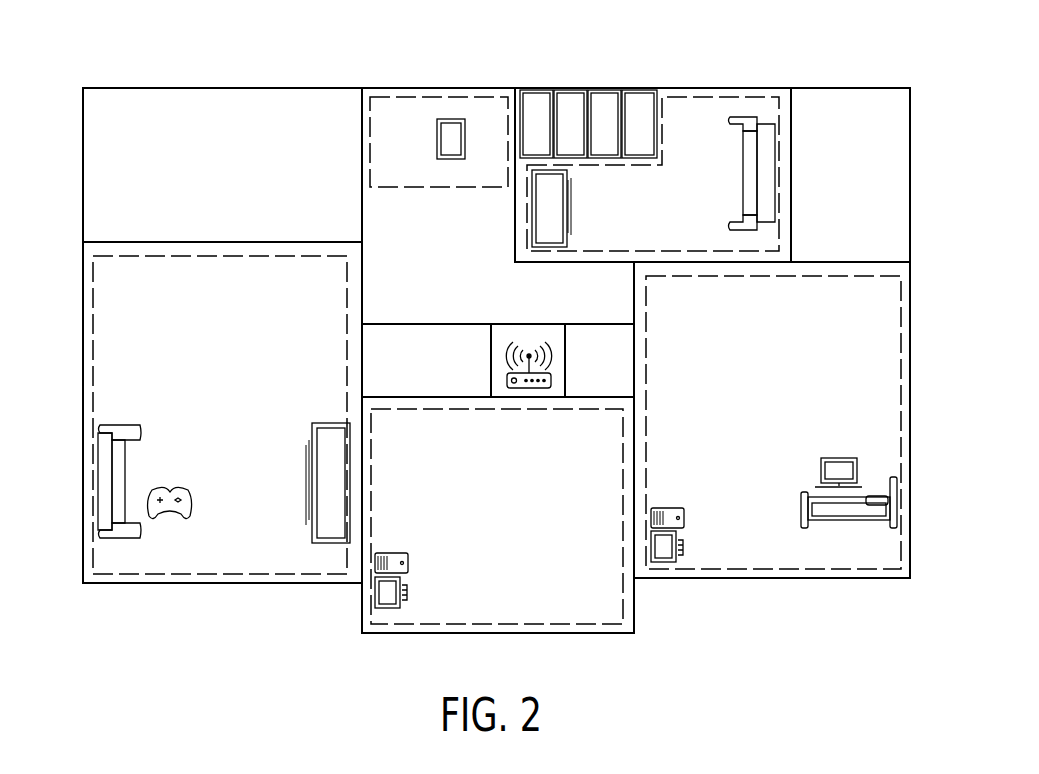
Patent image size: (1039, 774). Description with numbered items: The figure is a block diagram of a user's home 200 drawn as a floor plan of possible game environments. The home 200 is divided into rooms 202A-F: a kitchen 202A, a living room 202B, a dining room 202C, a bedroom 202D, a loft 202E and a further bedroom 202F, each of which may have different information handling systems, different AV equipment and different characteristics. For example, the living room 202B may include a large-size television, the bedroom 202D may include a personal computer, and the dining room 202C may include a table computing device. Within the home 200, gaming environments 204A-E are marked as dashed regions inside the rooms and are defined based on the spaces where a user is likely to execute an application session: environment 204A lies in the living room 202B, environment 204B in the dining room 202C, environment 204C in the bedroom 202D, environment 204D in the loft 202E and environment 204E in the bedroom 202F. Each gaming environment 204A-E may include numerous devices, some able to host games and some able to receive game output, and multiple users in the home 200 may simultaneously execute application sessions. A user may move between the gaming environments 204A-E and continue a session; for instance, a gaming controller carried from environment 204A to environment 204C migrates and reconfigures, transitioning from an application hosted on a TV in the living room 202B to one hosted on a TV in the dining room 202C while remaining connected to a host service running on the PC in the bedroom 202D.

The home 200 is at (112, 77).
The room 202A is at (108, 178).
The living room 202B is at (133, 345).
The dining room 202C is at (368, 217).
The bedroom 202D is at (510, 600).
The room 202E is at (687, 127).
The room 202F is at (760, 547).
The gaming environment 204A is at (248, 577).
The gaming environment 204B is at (447, 85).
The gaming environment 204C is at (413, 627).
The gaming environment 204D is at (720, 251).
The gaming environment 204E is at (733, 275).